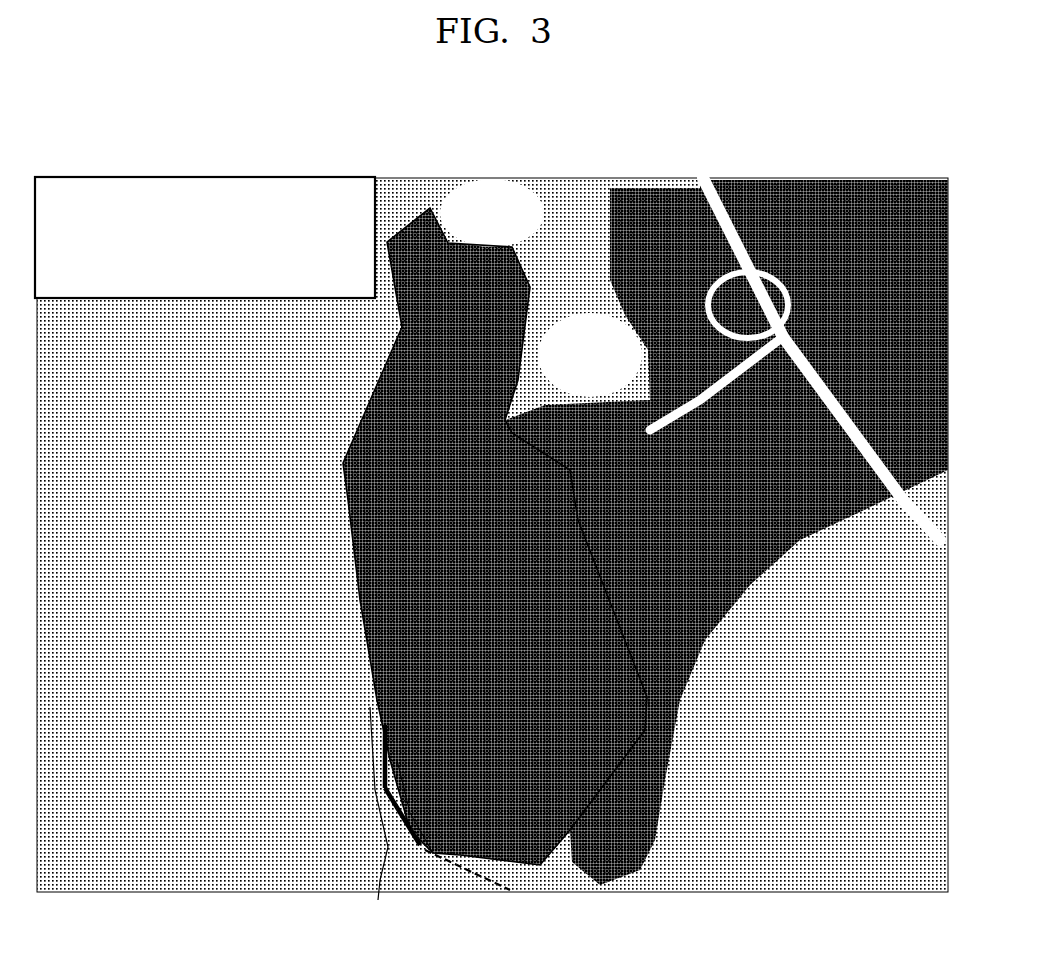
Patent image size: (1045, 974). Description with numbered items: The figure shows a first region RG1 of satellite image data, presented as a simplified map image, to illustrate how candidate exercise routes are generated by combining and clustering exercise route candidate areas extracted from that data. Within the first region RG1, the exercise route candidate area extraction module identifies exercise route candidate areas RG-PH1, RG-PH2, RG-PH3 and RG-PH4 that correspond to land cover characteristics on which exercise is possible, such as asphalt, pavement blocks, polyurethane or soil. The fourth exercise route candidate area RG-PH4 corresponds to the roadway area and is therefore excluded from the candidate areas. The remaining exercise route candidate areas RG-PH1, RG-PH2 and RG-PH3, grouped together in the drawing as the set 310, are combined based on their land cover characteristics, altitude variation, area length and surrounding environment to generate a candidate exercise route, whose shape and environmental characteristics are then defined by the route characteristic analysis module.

The first region RG1 is at (935, 125).
The recommended route phases group 310 is at (486, 805).
The first exercise route candidate area RG-PH1 is at (393, 752).
The second exercise route candidate area RG-PH2 is at (402, 804).
The third exercise route candidate area RG-PH3 is at (446, 851).
The fourth exercise route candidate area RG-PH4 is at (372, 822).